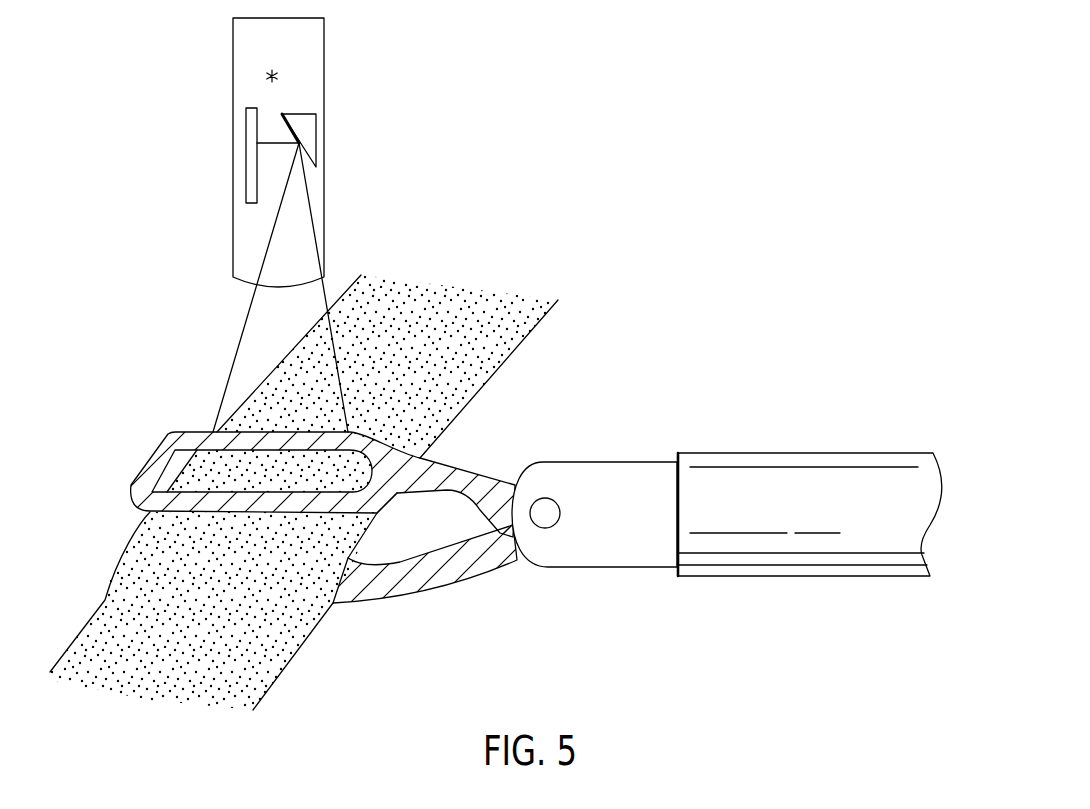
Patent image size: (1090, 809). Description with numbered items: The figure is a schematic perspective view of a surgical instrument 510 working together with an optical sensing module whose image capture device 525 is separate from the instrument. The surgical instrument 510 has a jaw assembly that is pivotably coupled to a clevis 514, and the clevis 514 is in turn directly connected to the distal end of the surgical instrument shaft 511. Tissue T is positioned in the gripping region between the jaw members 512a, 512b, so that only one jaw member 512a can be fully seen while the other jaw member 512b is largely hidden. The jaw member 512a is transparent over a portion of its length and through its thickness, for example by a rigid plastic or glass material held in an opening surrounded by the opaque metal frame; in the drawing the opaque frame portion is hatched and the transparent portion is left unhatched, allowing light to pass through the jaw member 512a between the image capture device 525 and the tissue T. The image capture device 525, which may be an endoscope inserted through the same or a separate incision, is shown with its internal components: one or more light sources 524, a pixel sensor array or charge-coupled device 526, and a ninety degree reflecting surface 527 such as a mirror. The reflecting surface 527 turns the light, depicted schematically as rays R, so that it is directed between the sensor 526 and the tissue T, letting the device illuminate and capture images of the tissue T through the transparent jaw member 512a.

The surgical instrument 510 is at (885, 608).
The surgical instrument shaft 511 is at (843, 452).
The jaw member 512a is at (190, 430).
The jaw member 512b is at (348, 604).
The clevis 514 is at (608, 460).
The light source 524 is at (270, 70).
The image capture device 525 is at (325, 52).
The pixel sensor array 526 is at (250, 155).
The reflecting surface 527 is at (308, 130).
The rays R is at (268, 143).
The tissue T is at (497, 313).